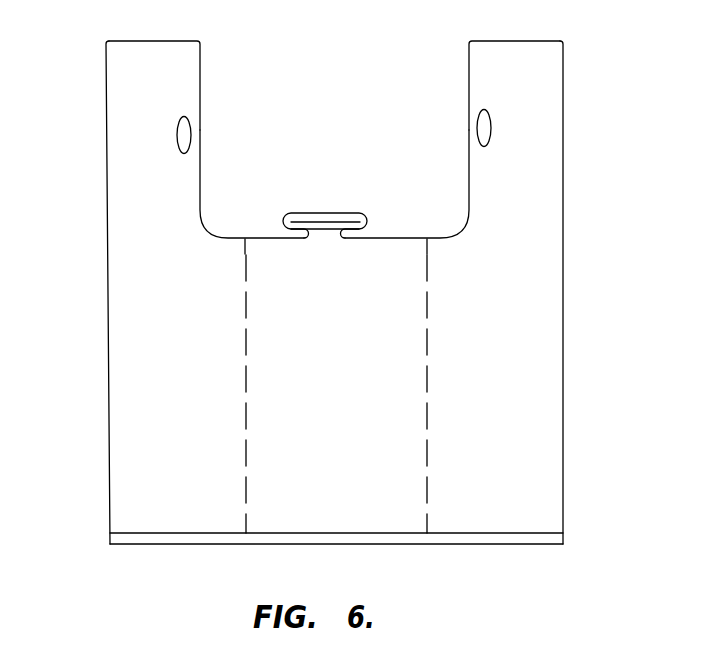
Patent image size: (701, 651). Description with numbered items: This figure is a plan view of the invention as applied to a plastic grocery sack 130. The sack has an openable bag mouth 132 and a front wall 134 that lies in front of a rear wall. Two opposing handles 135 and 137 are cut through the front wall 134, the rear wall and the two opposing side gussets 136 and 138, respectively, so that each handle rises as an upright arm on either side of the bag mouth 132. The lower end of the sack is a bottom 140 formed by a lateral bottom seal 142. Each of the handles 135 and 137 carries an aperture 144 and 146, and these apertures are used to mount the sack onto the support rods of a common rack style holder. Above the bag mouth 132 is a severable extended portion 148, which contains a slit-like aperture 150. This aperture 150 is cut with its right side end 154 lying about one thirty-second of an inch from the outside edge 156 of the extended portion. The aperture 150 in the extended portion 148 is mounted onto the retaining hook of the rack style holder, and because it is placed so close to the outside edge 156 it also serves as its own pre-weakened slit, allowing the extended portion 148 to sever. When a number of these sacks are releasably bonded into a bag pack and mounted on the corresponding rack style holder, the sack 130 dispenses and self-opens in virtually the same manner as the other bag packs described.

The plastic grocery sack 130 is at (563, 305).
The openable bag mouth 132 is at (258, 238).
The front wall 134 is at (361, 393).
The handle 135 is at (130, 75).
The side gusset 136 is at (128, 366).
The handle 137 is at (555, 88).
The side gusset 138 is at (548, 376).
The bottom 140 is at (317, 547).
The lateral bottom seal 142 is at (381, 538).
The aperture 144 is at (177, 135).
The aperture 146 is at (492, 128).
The severable extended portion 148 is at (292, 213).
The slit-like aperture 150 is at (325, 213).
The right side end 154 is at (365, 213).
The outside edge 156 is at (372, 218).